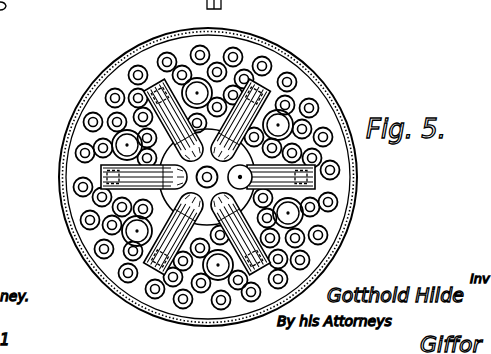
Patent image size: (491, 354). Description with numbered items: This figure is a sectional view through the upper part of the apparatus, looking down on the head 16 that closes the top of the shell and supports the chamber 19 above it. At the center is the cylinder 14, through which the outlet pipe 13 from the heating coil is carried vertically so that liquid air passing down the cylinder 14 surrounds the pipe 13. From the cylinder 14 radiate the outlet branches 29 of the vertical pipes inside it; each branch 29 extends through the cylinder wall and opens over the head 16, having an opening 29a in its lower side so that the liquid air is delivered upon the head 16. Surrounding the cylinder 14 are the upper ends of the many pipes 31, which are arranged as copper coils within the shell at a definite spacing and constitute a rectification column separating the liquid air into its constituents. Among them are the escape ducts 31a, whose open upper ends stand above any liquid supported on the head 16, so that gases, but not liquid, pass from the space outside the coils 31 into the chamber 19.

The outlet pipe 13 is at (250, 156).
The cylinder 14 is at (215, 133).
The head 16 is at (278, 62).
The chamber 19 is at (73, 118).
The outlet branches 29 is at (256, 99).
The opening 29a is at (377, 184).
The pipes 31 is at (102, 198).
The escape ducts 31a is at (382, 217).